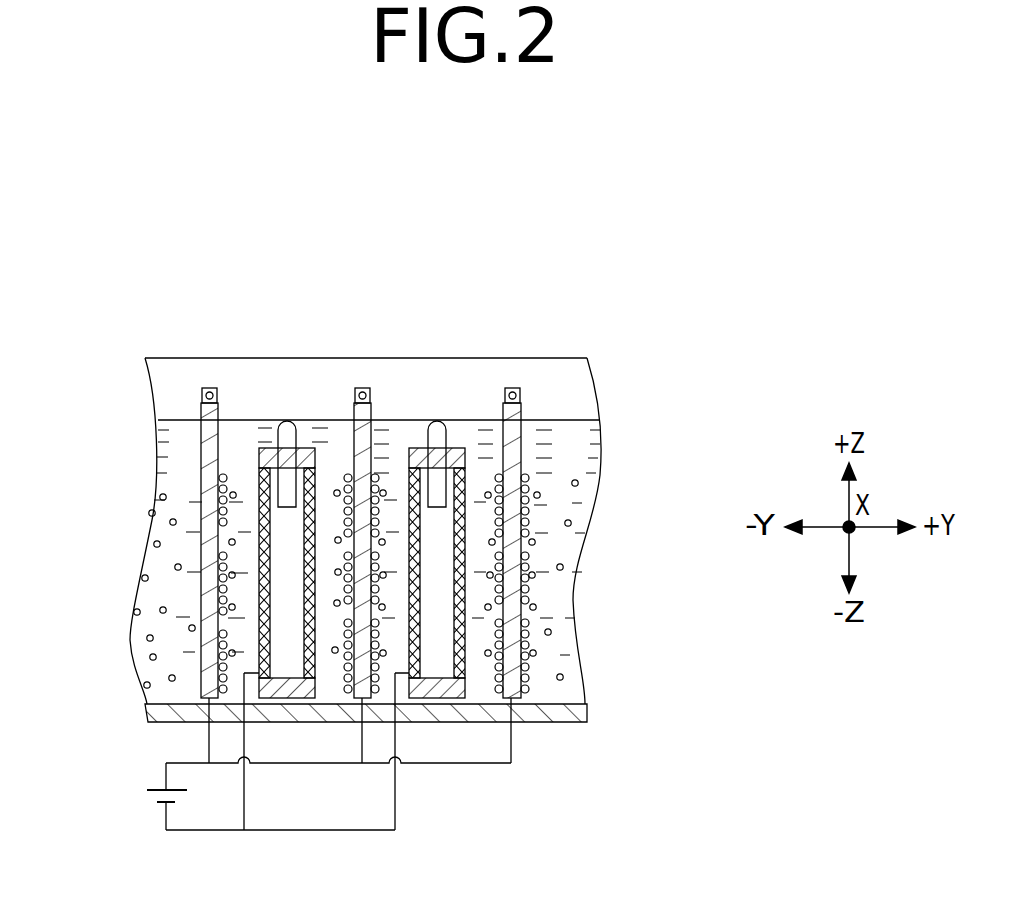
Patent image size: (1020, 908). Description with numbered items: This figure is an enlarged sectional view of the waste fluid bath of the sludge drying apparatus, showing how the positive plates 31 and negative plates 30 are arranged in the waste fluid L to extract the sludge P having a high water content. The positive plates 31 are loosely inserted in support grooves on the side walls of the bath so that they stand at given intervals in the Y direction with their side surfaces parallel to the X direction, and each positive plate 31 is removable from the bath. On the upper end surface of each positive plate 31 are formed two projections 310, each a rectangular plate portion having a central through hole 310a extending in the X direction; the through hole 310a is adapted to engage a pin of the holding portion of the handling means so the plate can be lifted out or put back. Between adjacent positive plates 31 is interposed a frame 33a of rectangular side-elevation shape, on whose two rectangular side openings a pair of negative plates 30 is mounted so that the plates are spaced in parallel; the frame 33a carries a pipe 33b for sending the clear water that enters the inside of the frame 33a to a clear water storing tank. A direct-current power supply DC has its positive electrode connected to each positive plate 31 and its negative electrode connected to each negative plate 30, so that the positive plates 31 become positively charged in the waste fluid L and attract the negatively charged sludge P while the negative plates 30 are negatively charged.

The negative plate 30 is at (413, 541).
The positive plate 31 is at (188, 372).
The projection 310 is at (211, 389).
The through hole 310a is at (219, 393).
The frame 33a is at (287, 434).
The pipe 33b is at (298, 462).
The sludge P is at (160, 496).
The waste fluid L is at (177, 412).
The direct-current power supply DC is at (152, 790).